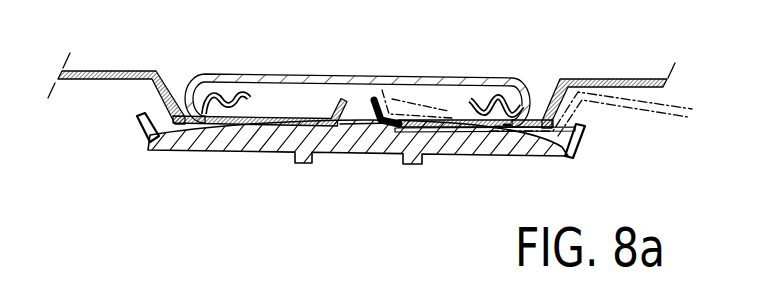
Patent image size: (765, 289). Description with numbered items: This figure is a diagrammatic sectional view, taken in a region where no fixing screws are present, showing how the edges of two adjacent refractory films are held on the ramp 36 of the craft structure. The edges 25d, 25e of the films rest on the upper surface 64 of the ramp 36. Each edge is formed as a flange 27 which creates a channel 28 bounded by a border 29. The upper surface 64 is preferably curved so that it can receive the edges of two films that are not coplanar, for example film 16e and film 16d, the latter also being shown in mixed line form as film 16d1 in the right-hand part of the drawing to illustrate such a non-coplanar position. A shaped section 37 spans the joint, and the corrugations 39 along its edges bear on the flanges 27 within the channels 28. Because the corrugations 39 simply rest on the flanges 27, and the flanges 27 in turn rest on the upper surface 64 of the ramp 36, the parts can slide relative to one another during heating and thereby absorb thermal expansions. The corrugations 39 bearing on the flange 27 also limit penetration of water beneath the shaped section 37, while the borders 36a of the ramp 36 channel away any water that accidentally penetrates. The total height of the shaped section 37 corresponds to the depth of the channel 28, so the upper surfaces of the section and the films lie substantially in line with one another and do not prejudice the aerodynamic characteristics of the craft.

The film 16e is at (89, 71).
The edge of film 25e is at (265, 106).
The shaped section 37 is at (291, 66).
The border 29 is at (373, 102).
The channel 28 is at (445, 98).
The film 16d is at (585, 79).
The film in non-coplanar position 16d1 is at (637, 100).
The border of ramp 36a is at (583, 128).
The upper surface of ramp 64 is at (163, 128).
The ramp 36 is at (206, 152).
The flange 27 is at (367, 128).
The edge of film 25d is at (483, 139).
The corrugations 39 is at (507, 124).